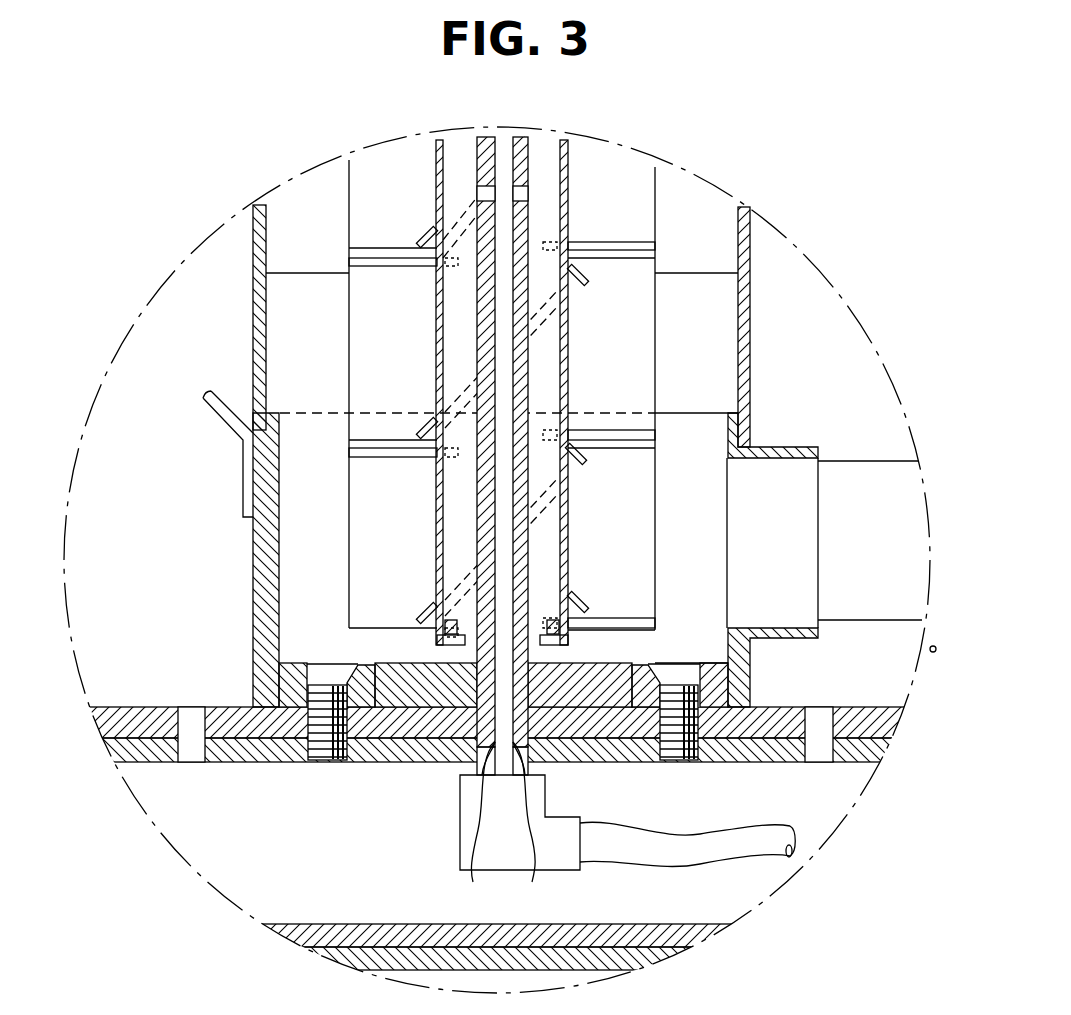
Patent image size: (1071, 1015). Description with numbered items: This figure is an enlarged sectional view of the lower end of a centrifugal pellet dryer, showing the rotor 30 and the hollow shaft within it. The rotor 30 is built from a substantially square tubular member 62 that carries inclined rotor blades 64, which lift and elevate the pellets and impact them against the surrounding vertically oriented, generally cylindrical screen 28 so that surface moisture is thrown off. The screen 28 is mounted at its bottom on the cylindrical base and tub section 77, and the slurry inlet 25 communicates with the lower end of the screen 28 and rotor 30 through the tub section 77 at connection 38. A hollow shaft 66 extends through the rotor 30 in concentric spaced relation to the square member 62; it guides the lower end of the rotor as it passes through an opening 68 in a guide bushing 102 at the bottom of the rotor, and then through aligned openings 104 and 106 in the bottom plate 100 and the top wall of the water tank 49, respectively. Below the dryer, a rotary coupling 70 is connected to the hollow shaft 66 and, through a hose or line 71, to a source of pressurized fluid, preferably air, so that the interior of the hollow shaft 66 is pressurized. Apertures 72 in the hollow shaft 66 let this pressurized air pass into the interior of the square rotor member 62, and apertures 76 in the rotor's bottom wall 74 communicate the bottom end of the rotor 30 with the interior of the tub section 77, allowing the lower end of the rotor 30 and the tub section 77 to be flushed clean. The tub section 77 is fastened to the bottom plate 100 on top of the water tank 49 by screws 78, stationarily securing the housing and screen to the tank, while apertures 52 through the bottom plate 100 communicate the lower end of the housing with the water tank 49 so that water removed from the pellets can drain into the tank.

The rotor 30 is at (577, 173).
The square tubular member 62 is at (568, 197).
The inclined rotor blades 64 is at (623, 303).
The apertures 72 is at (485, 191).
The screen 28 is at (750, 296).
The connection 38 is at (760, 434).
The slurry inlet 25 is at (863, 472).
The hollow shaft 66 is at (482, 472).
The base and tub section 77 is at (253, 562).
The apertures 76 is at (460, 640).
The bottom wall 74 is at (547, 642).
The bottom plate 100 is at (862, 718).
The water tank 49 is at (862, 763).
The apertures 52 is at (190, 762).
The screws 78 is at (323, 760).
The opening 68 is at (470, 686).
The guide bushing 102 is at (580, 692).
The opening 106 is at (471, 828).
The opening 104 is at (530, 828).
The rotary coupling 70 is at (558, 862).
The hose or line 71 is at (743, 853).